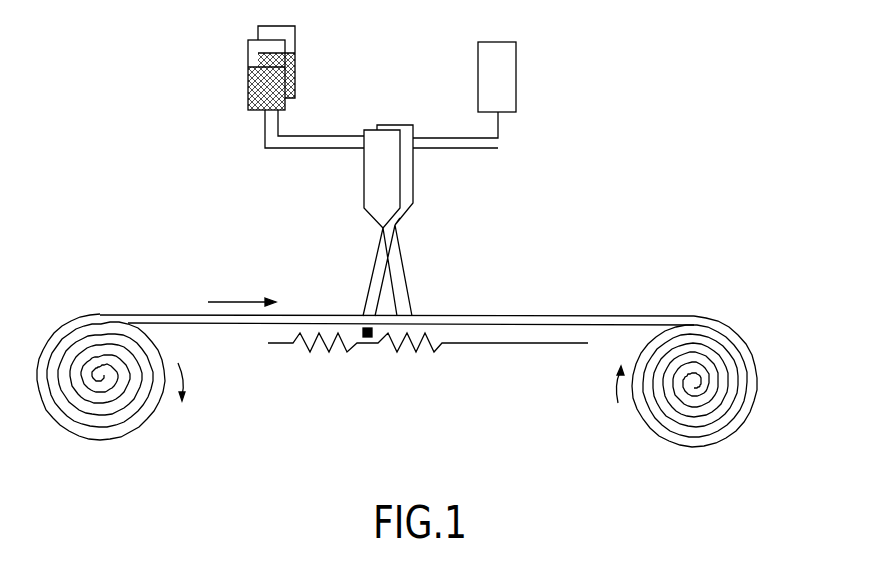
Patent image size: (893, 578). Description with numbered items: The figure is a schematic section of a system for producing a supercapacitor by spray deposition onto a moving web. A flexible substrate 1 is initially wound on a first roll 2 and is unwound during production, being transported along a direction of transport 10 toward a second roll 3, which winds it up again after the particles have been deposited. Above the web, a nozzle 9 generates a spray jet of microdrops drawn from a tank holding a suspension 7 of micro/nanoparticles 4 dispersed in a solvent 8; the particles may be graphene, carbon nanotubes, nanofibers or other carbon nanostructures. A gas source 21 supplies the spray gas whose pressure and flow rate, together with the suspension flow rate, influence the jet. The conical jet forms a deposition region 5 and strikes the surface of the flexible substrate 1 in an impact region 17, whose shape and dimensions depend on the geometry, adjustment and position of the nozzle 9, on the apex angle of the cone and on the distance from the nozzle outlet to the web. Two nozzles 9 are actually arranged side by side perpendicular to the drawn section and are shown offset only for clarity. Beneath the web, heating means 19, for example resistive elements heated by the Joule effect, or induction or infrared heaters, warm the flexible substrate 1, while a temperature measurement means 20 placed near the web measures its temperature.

The flexible substrate 1 is at (468, 315).
The first roll 2 is at (128, 403).
The second roll 3 is at (712, 423).
The deposition region 5 is at (380, 263).
The suspension 7 is at (257, 87).
The micro/nanoparticles 4 is at (257, 87).
The solvent 8 is at (252, 84).
The nozzle 9 is at (405, 172).
The direction of transport 10 is at (238, 302).
The impact region 17 is at (357, 263).
The heating means 19 is at (442, 397).
The temperature measurement means 20 is at (372, 337).
The gas source 21 is at (505, 75).